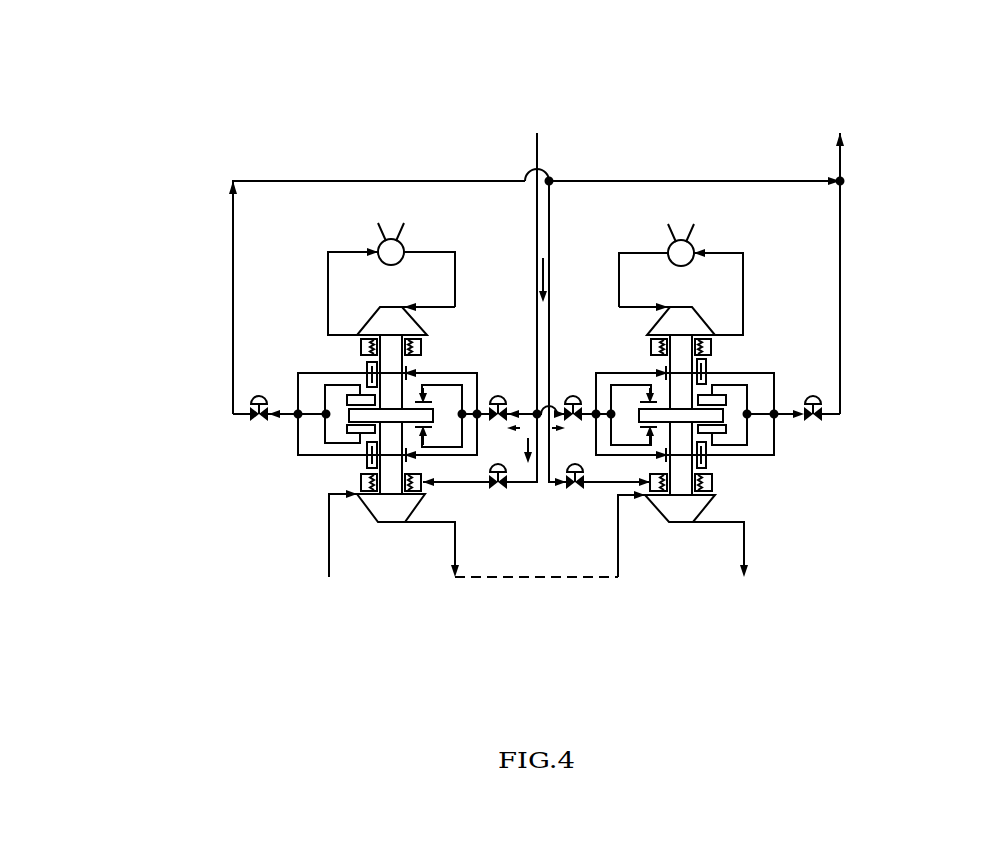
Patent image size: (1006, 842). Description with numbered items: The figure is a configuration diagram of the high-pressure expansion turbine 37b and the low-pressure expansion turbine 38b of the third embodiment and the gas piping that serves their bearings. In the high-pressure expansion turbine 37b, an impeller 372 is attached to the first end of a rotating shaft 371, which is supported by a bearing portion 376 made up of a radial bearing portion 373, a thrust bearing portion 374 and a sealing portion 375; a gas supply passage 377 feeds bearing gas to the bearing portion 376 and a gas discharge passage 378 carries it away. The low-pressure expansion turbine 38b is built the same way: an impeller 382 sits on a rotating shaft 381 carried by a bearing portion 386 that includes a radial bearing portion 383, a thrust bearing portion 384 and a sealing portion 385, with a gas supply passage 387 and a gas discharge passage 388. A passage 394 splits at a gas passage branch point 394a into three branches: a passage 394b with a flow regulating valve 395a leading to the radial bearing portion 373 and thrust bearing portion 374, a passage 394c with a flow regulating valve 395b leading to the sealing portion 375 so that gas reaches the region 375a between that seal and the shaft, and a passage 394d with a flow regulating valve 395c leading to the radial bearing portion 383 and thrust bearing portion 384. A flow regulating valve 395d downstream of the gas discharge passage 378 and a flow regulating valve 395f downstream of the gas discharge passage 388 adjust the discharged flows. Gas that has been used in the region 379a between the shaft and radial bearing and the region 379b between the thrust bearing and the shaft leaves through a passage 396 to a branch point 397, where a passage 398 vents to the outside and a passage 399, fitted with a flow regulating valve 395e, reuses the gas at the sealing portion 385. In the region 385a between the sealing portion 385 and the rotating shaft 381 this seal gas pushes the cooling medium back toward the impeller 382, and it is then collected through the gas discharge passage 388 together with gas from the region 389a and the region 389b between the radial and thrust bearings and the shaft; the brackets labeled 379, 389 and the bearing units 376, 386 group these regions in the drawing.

The high-pressure expansion turbine 37b is at (467, 129).
The low-pressure expansion turbine 38b is at (777, 129).
The rotating shaft 371 is at (392, 482).
The impeller 372 is at (367, 510).
The radial bearing portion 373 is at (370, 378).
The thrust bearing portion 374 is at (350, 432).
The sealing portion 375 is at (365, 480).
The region between the sealing portion and the rotating shaft 375a is at (400, 478).
The bearing portion 376 is at (146, 448).
The gas supply passage 377 is at (459, 333).
The gas discharge passage 378 is at (286, 310).
The bearing housing 379 is at (425, 97).
The region between the rotating shaft and the radial bearing portion 379a is at (402, 372).
The region between the thrust bearing portion and the rotating shaft 379b is at (425, 396).
The rotating shaft 381 is at (682, 484).
The impeller 382 is at (710, 512).
The radial bearing portion 383 is at (703, 378).
The thrust bearing portion 384 is at (718, 429).
The sealing portion 385 is at (712, 484).
The region between the sealing portion and the rotating shaft 385a is at (668, 484).
The bearing portion 386 is at (928, 447).
The gas supply passage 387 is at (604, 265).
The gas discharge passage 388 is at (796, 311).
The bearing housing 389 is at (590, 633).
The region between the radial bearing portion and the rotating shaft 389a is at (663, 468).
The region between the thrust bearing portion and the rotating shaft 389b is at (647, 440).
The passage 394 is at (533, 222).
The gas passage branch point 394a is at (537, 410).
The passage 394b is at (530, 412).
The passage 394c is at (445, 483).
The passage 394d is at (551, 412).
The flow regulating valve 395a is at (500, 393).
The flow regulating valve 395b is at (482, 470).
The flow regulating valve 395c is at (573, 397).
The flow regulating valve 395d is at (260, 395).
The flow regulating valve 395e is at (565, 466).
The flow regulating valve 395f is at (813, 398).
The passage 396 is at (275, 181).
The branch point 397 is at (548, 178).
The passage 398 is at (800, 181).
The passage 399 is at (556, 228).